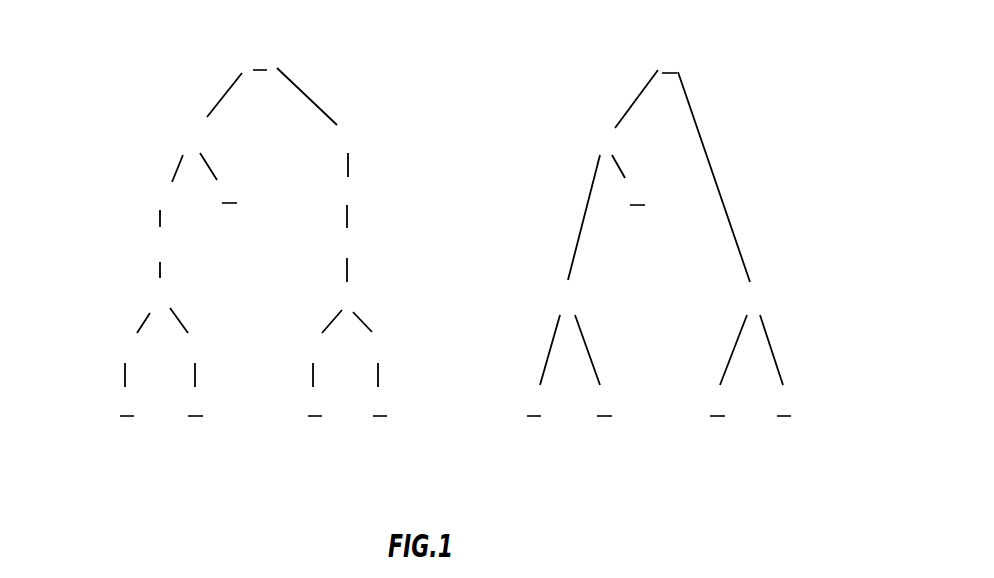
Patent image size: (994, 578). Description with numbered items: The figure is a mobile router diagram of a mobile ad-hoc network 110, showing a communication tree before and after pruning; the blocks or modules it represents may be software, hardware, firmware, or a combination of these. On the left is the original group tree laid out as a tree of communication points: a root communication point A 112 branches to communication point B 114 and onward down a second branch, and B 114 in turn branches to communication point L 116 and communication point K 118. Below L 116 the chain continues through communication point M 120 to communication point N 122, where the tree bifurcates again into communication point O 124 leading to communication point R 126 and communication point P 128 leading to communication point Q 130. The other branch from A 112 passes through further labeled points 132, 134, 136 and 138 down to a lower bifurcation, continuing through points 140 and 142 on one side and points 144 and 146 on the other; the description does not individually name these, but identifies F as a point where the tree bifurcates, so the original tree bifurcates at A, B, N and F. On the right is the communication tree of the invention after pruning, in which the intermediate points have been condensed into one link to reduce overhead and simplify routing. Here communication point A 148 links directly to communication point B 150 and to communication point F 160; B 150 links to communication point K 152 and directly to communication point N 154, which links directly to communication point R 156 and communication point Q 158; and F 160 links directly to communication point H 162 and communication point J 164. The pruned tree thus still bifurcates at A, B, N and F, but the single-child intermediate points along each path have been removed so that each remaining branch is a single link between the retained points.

The mobile ad-hoc network 110 is at (757, 51).
The communication point A 112 is at (250, 52).
The communication point B 114 is at (187, 128).
The communication point L 116 is at (152, 190).
The communication point K 118 is at (240, 190).
The communication point M 120 is at (148, 242).
The communication point N 122 is at (148, 298).
The communication point O 124 is at (117, 348).
The communication point R 126 is at (118, 403).
The communication point P 128 is at (207, 340).
The communication point Q 130 is at (205, 405).
The node C 132 is at (362, 138).
The node D 134 is at (362, 193).
The node E 136 is at (360, 245).
The node F 138 is at (357, 298).
The node G 140 is at (310, 345).
The node H 142 is at (307, 398).
The node I 144 is at (388, 350).
The node J 146 is at (392, 398).
The communication point A 148 is at (658, 55).
The communication point B 150 is at (593, 133).
The communication point K 152 is at (647, 193).
The communication point N 154 is at (580, 297).
The communication point R 156 is at (543, 408).
The communication point Q 158 is at (615, 392).
The communication point F 160 is at (762, 290).
The communication point H 162 is at (708, 408).
The communication point J 164 is at (793, 412).